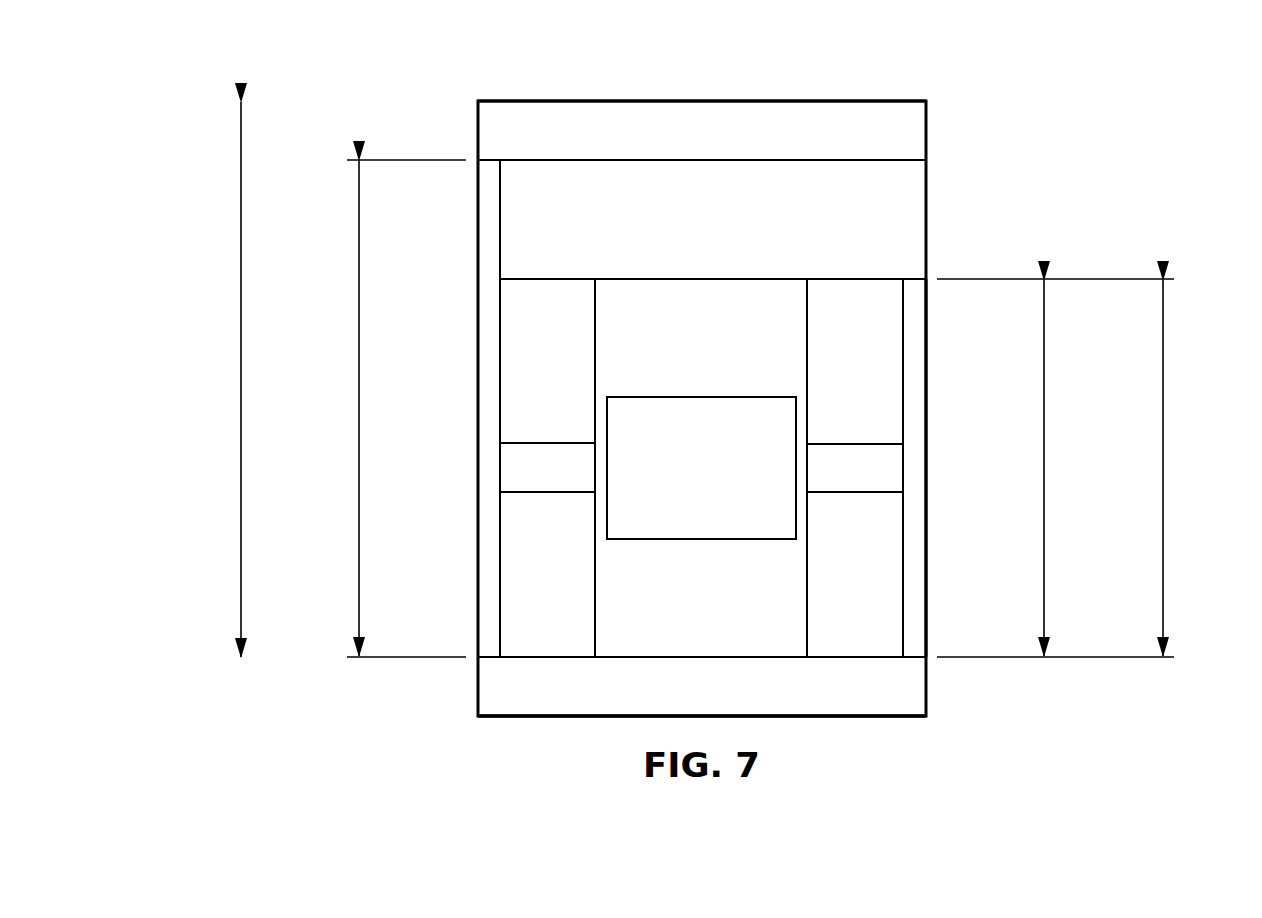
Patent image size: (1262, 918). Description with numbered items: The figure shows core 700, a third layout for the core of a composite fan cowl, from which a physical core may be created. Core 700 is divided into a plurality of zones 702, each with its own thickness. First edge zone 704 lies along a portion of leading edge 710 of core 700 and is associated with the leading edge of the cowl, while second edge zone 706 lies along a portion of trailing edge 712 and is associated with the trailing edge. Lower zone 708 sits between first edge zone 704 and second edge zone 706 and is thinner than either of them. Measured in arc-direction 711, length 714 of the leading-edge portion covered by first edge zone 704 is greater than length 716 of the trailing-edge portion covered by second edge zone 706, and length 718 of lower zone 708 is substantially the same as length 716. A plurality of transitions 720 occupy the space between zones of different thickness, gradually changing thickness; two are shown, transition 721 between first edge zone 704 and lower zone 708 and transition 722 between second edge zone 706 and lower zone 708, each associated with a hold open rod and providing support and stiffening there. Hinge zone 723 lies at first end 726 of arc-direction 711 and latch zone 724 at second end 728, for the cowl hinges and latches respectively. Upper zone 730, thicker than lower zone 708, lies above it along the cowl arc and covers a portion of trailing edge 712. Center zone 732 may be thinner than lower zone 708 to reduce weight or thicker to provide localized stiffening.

The core 700 is at (393, 101).
The plurality of zones 702 is at (952, 218).
The first edge zone 704 is at (487, 574).
The second edge zone 706 is at (916, 574).
The lower zone 708 is at (724, 612).
The leading edge 710 is at (478, 408).
The arc-direction 711 is at (240, 378).
The trailing edge 712 is at (928, 466).
The length 714 is at (358, 408).
The length 716 is at (1045, 467).
The length 718 is at (1164, 467).
The plurality of transitions 720 is at (940, 160).
The transition 721 is at (526, 376).
The transition 722 is at (833, 376).
The hinge zone 723 is at (723, 145).
The latch zone 724 is at (723, 698).
The first end 726 is at (796, 101).
The second end 728 is at (819, 718).
The upper zone 730 is at (723, 233).
The center zone 732 is at (724, 482).